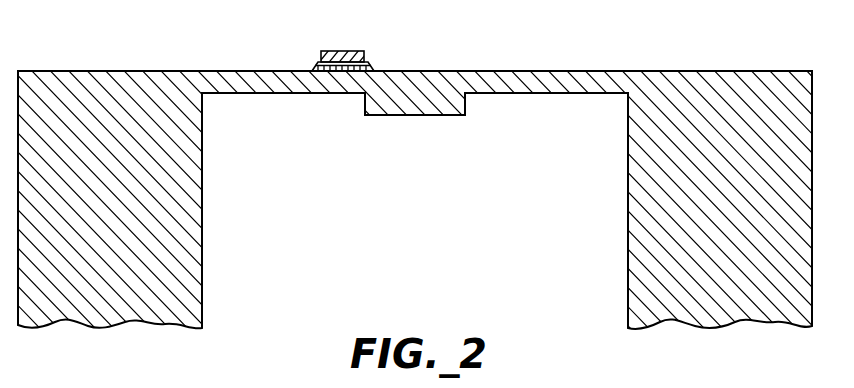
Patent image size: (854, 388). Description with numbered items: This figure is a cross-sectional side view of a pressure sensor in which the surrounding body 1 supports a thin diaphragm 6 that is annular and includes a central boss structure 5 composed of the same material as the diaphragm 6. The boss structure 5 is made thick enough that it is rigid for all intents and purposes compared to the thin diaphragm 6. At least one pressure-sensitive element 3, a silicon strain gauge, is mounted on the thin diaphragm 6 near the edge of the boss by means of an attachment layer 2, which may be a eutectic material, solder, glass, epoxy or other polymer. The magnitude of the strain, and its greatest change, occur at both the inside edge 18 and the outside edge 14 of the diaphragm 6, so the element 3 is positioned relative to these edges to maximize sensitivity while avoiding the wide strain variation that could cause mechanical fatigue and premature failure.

The substrate body 1 is at (188, 243).
The electrode/contact layer 2 is at (312, 67).
The pressure-sensitive element 3 is at (348, 50).
The central boss structure 5 is at (428, 117).
The diaphragm 6 is at (518, 77).
The outside edge of diaphragm 14 is at (625, 97).
The inside edge of diaphragm 18 is at (363, 96).